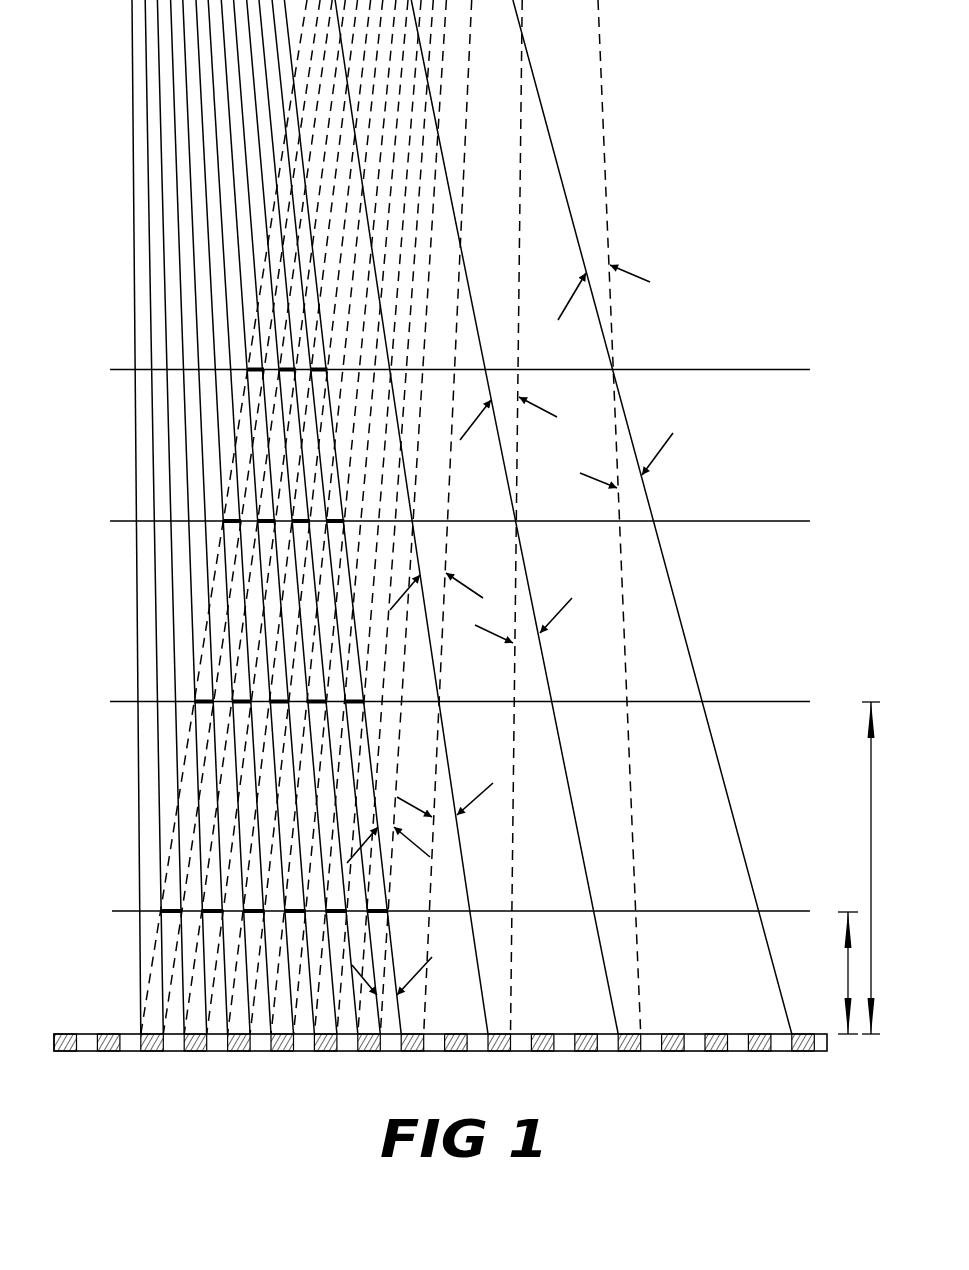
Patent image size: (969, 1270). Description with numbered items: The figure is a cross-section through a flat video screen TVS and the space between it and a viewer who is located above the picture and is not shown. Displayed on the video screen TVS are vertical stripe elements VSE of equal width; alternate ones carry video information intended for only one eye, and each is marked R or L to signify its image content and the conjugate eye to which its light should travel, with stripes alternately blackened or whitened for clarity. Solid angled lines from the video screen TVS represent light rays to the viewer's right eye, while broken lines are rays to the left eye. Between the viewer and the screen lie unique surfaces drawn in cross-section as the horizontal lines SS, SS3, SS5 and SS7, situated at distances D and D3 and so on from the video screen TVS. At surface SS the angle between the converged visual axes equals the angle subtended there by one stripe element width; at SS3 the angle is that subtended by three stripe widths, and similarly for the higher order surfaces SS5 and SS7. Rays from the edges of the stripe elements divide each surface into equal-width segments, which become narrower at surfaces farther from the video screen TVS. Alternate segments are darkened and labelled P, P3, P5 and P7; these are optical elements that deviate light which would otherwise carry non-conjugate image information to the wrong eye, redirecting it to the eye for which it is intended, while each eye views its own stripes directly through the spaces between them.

The stereoptic surface of seventh order SS7 is at (431, 358).
The stereoptic surface of fifth order SS5 is at (431, 510).
The stereoptic surface of third order SS3 is at (437, 690).
The stereoptic surface SS is at (437, 900).
The optical element at surface SS7 P7 is at (249, 373).
The optical element at surface SS5 P5 is at (224, 524).
The optical element at surface SS3 P3 is at (195, 704).
The optical element at surface SS P is at (161, 914).
The distance of surface SS3 from video screen D3 is at (847, 868).
The distance of surface SS from video screen D is at (834, 973).
The video screen TVS is at (428, 1027).
The vertical stripe elements VSE is at (85, 1053).
The right-eye stripe marking R is at (456, 1075).
The left-eye stripe marking L is at (456, 1075).